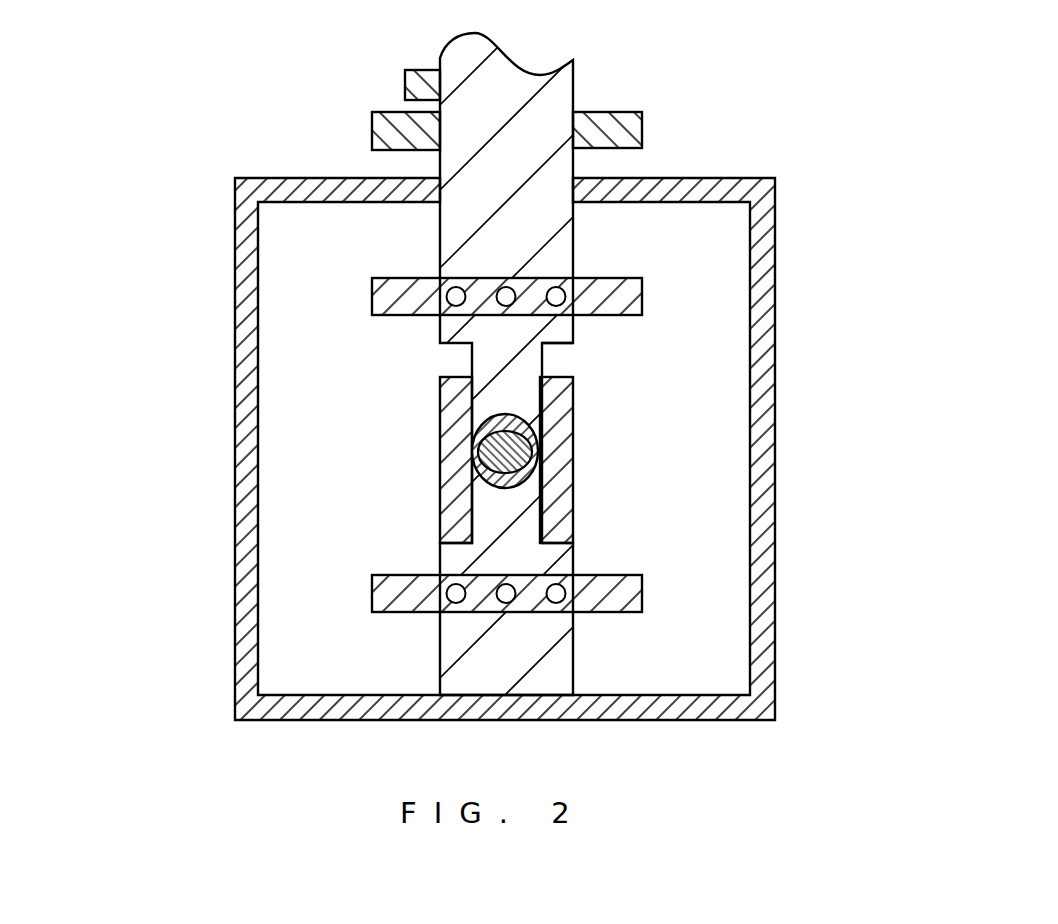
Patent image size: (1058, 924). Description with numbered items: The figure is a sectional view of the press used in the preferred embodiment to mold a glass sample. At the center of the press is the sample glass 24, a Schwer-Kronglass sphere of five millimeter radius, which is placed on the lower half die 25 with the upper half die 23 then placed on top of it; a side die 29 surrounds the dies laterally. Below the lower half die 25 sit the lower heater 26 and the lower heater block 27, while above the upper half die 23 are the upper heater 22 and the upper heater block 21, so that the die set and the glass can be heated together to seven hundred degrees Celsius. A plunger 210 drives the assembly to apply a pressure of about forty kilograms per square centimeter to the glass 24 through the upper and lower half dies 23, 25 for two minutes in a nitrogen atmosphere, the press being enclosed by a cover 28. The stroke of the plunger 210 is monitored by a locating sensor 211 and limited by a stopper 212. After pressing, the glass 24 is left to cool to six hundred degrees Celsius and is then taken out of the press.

The plunger 210 is at (560, 98).
The locating sensor 211 is at (405, 80).
The stopper 212 is at (643, 135).
The upper heater 22 is at (580, 283).
The upper heater block 21 is at (642, 287).
The upper half die 23 is at (573, 338).
The sample glass 24 is at (472, 433).
The lower half die 25 is at (485, 518).
The lower heater 26 is at (450, 592).
The lower heater block 27 is at (380, 598).
The cover 28 is at (235, 662).
The side die 29 is at (563, 453).